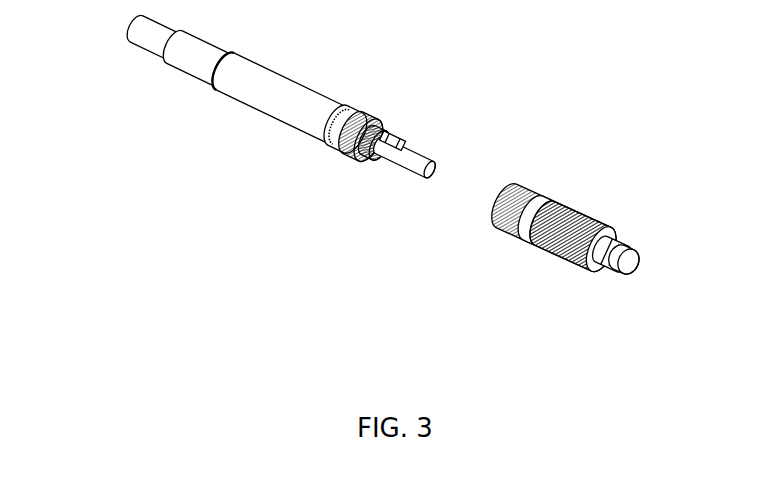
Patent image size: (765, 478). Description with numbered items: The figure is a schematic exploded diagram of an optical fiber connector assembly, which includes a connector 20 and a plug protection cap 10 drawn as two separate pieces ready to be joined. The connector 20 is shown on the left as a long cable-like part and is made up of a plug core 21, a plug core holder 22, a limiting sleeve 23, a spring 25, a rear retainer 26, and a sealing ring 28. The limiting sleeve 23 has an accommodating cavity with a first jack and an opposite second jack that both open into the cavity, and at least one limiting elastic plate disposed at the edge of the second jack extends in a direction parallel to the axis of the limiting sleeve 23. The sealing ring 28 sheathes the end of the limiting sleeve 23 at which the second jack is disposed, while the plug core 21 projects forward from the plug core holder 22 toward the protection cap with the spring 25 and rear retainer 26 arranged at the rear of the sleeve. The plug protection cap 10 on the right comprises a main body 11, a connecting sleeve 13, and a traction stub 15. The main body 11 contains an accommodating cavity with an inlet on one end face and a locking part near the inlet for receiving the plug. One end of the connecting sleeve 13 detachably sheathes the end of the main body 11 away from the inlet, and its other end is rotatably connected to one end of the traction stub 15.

The plug protection cap 10 is at (577, 195).
The main body 11 is at (502, 232).
The connecting sleeve 13 is at (553, 250).
The traction stub 15 is at (590, 268).
The connector 20 is at (342, 85).
The plug core 21 is at (410, 158).
The plug core holder 22 is at (300, 107).
The limiting sleeve 23 is at (360, 146).
The spring 25 is at (389, 125).
The rear retainer 26 is at (380, 158).
The sealing ring 28 is at (340, 133).